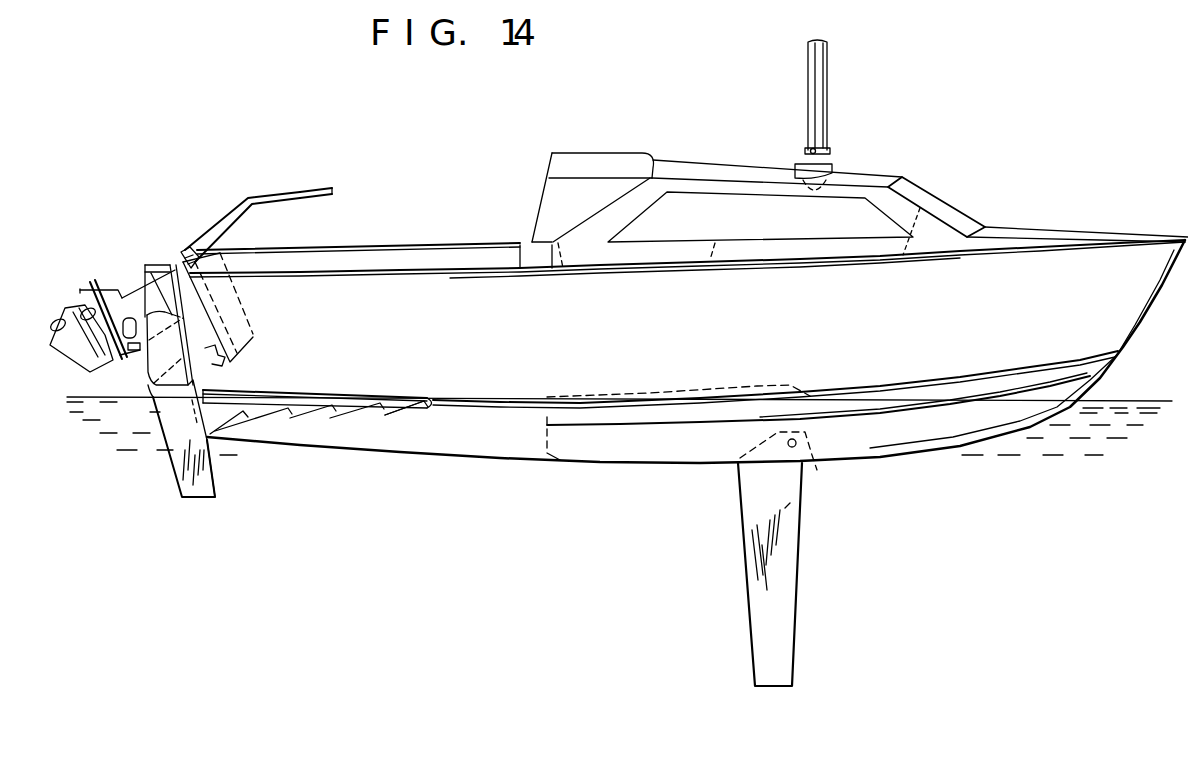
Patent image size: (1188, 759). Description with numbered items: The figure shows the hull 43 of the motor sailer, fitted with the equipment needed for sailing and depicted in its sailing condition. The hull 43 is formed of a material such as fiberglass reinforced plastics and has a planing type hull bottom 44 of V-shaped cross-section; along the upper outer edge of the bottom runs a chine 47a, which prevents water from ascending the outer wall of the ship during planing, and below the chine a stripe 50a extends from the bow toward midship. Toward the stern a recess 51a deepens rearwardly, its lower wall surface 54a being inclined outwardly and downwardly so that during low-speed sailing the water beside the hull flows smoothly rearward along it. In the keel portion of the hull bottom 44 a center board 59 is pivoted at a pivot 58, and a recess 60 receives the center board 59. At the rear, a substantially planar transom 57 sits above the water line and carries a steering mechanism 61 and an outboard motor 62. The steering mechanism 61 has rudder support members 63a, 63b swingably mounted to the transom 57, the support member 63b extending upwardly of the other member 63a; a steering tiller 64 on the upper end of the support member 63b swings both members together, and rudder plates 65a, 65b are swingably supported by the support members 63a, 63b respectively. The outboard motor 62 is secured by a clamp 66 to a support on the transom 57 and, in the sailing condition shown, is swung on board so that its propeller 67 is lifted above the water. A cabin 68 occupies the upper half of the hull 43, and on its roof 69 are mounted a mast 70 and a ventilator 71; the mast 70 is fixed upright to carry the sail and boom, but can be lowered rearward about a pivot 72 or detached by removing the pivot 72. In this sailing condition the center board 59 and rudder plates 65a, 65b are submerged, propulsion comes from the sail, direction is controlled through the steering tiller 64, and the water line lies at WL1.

The hull 43 is at (679, 319).
The hull bottom 44 is at (614, 456).
The chine 47a is at (888, 393).
The lower chine strake 50a is at (945, 403).
The recess 51a is at (357, 405).
The lower wall surface 54a is at (264, 414).
The transom 57 is at (184, 244).
The pivot 58 is at (797, 447).
The center board 59 is at (752, 574).
The recess 60 is at (757, 392).
The steering mechanism 61 is at (242, 211).
The outboard motor 62 is at (235, 300).
The rudder support member 63a is at (152, 405).
The rudder support member 63b is at (154, 310).
The steering tiller 64 is at (315, 179).
The rudder plate 65a is at (187, 483).
The rudder plate 65b is at (211, 468).
The clamp 66 is at (231, 366).
The propeller 67 is at (93, 326).
The cabin 68 is at (687, 210).
The roof 69 is at (752, 198).
The mast 70 is at (815, 67).
The ventilator 71 is at (829, 168).
The pivot 72 is at (803, 141).
The water line WL1 is at (609, 384).